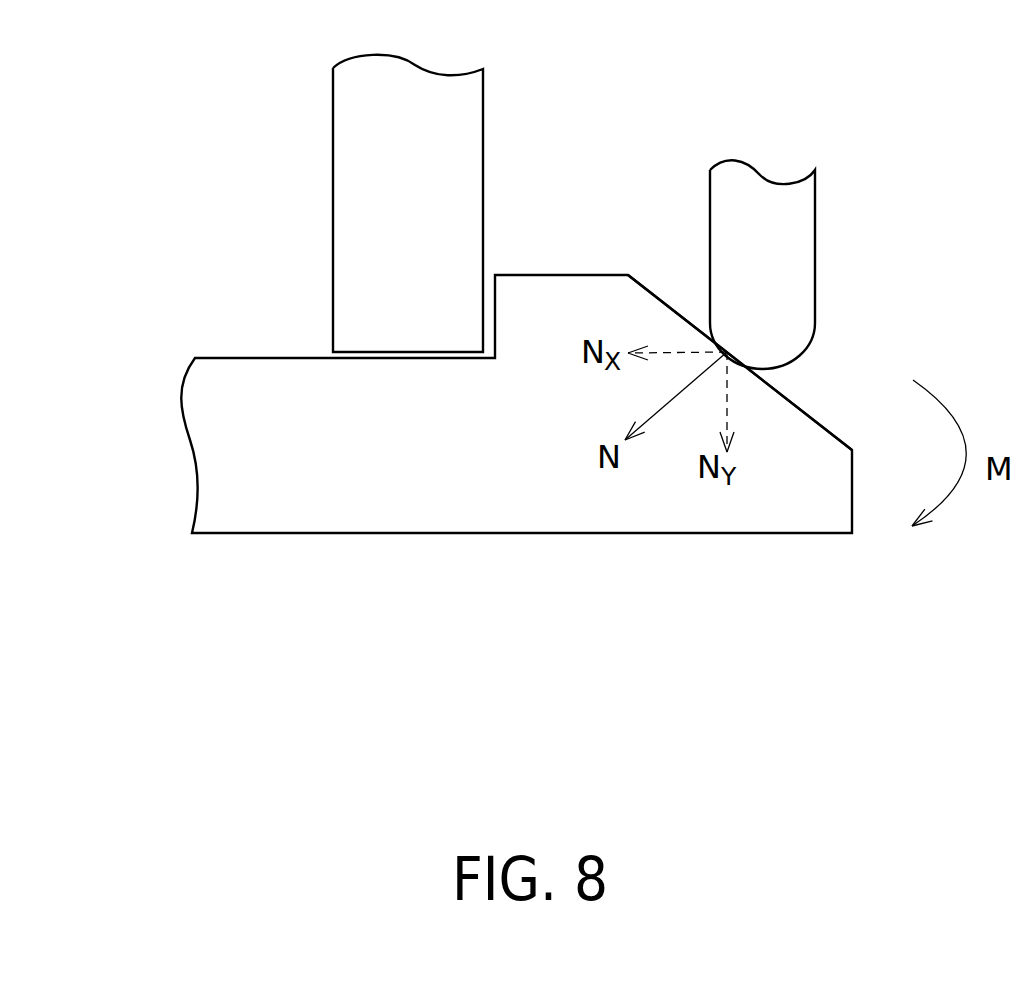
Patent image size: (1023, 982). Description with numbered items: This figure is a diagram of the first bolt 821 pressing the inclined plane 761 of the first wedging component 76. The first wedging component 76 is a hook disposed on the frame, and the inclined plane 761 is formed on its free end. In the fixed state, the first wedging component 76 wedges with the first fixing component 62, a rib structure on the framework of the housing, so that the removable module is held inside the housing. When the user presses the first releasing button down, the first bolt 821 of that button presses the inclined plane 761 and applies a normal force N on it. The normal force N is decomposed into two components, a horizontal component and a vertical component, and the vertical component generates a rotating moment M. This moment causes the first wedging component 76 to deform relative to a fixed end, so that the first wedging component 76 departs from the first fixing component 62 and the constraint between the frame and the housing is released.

The first fixing component 62 is at (352, 198).
The first wedging component 76 is at (525, 518).
The inclined plane 761 is at (660, 298).
The first bolt 821 is at (797, 273).